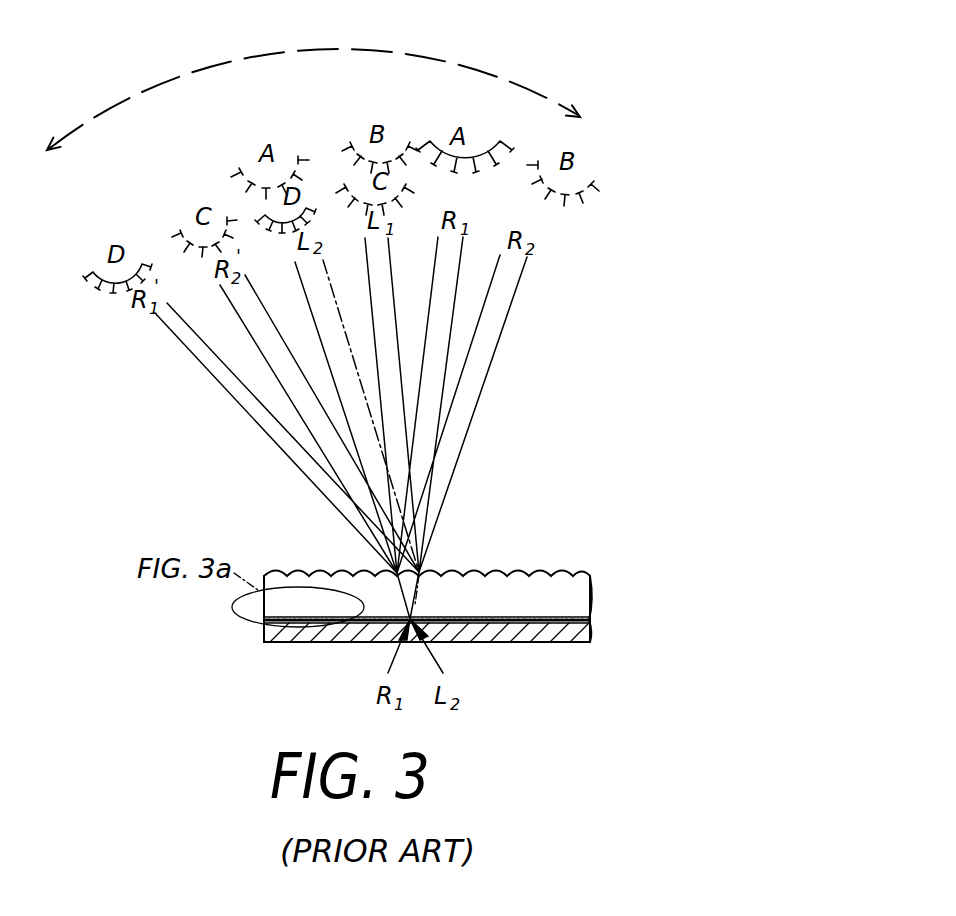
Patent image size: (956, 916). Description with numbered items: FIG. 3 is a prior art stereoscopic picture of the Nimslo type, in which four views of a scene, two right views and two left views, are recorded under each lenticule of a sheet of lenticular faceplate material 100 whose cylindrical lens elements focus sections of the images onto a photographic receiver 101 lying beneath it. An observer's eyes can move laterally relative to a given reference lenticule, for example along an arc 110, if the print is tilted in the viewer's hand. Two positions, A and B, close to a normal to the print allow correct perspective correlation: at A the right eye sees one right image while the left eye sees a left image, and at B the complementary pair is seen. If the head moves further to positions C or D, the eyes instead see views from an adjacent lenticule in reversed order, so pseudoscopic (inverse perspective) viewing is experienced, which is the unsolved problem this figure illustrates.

The lenticular faceplate material 100 is at (580, 564).
The photographic receiver 101 is at (603, 620).
The arc 110 is at (466, 33).